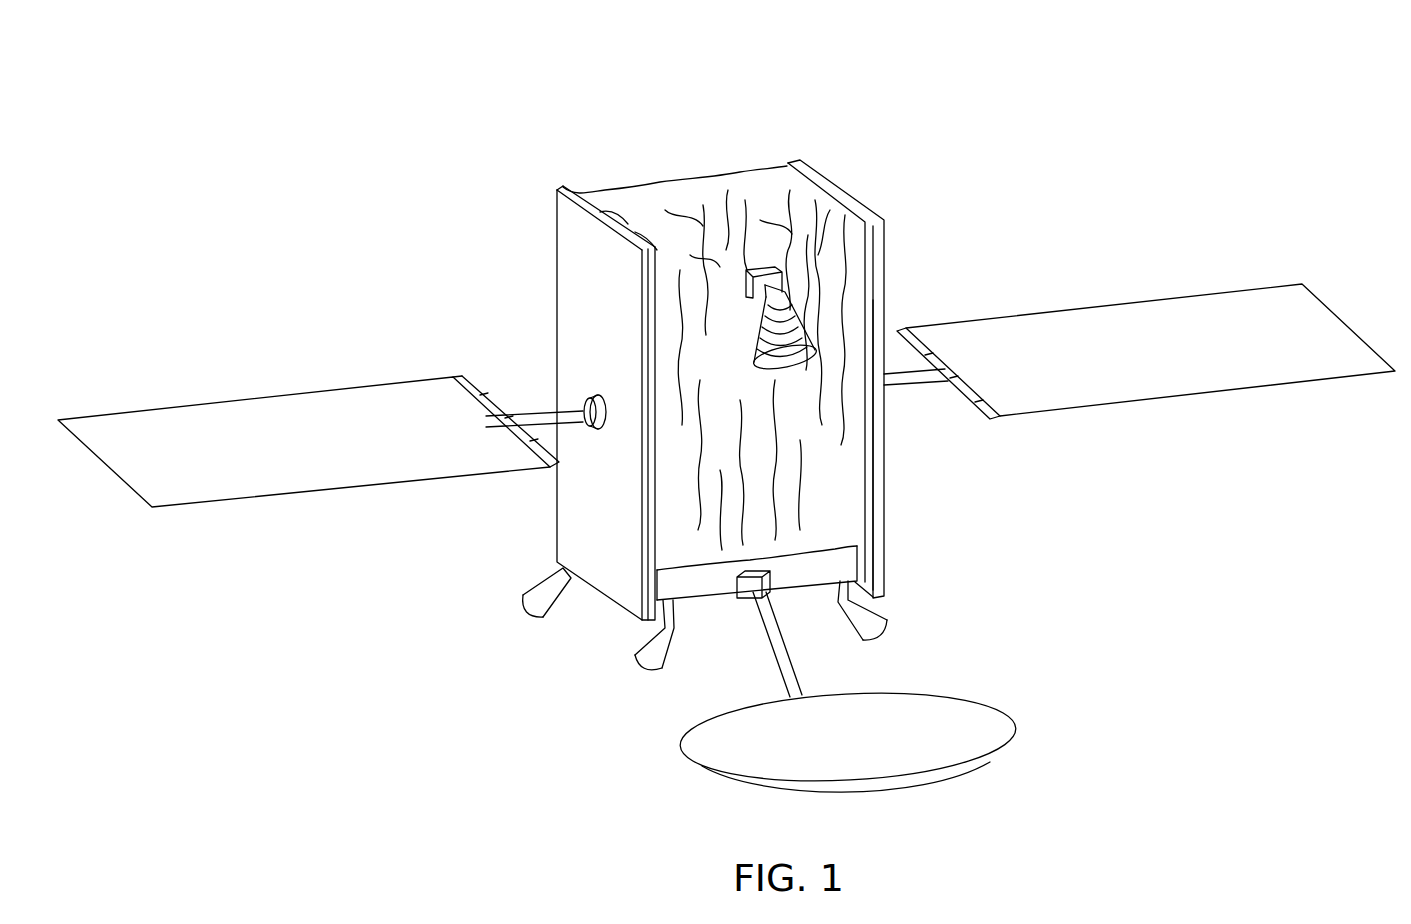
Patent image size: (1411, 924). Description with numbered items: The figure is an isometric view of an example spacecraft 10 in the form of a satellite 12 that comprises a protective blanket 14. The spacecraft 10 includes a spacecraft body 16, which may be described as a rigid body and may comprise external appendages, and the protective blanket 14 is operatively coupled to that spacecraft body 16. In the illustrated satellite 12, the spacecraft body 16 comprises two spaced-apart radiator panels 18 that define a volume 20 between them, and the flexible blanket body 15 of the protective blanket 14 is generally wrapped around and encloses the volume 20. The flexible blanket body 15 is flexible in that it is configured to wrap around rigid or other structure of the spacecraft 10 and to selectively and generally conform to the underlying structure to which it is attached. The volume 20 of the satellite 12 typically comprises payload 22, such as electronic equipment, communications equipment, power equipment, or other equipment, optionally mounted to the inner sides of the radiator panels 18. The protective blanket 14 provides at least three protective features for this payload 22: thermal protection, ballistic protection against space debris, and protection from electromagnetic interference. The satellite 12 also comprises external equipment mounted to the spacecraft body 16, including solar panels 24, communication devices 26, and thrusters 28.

The spacecraft 10 is at (1013, 84).
The satellite 12 is at (949, 82).
The protective blanket 14 is at (640, 181).
The flexible blanket body 15 is at (611, 190).
The spacecraft body 16 is at (846, 186).
The radiator panels 18 is at (553, 285).
The volume 20 is at (729, 156).
The payload 22 is at (833, 265).
The solar panels 24 is at (225, 402).
The communication devices 26 is at (762, 325).
The thrusters 28 is at (533, 590).